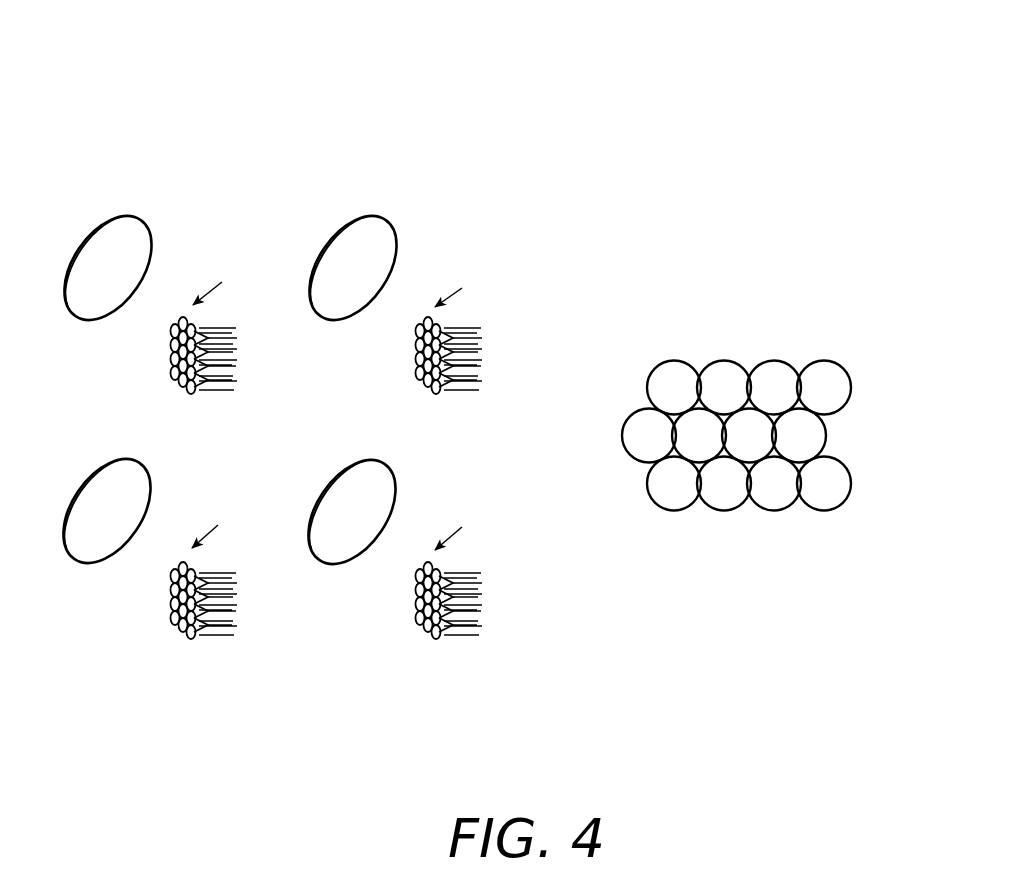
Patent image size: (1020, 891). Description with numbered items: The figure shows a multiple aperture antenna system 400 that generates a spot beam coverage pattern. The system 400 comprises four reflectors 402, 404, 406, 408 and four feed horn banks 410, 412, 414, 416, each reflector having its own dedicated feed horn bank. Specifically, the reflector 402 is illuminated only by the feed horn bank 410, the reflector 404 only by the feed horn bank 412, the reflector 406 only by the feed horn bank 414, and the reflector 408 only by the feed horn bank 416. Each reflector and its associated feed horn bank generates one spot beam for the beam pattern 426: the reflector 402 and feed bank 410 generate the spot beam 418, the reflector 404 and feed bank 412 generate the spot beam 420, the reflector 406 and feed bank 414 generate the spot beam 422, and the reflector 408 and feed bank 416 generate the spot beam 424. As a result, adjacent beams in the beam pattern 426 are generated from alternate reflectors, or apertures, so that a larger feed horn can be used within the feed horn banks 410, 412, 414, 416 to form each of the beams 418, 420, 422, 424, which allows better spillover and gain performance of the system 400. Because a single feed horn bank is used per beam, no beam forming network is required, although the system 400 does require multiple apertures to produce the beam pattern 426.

The multiple aperture antenna system 400 is at (430, 135).
The reflector 402 is at (147, 265).
The reflector 404 is at (395, 265).
The reflector 406 is at (150, 510).
The reflector 408 is at (392, 520).
The feed horn bank 410 is at (238, 362).
The feed horn bank 412 is at (485, 362).
The feed horn bank 414 is at (237, 607).
The feed horn bank 416 is at (482, 607).
The spot beam 418 is at (675, 362).
The spot beam 420 is at (740, 363).
The spot beam 422 is at (633, 457).
The spot beam 424 is at (832, 437).
The beam pattern 426 is at (722, 563).